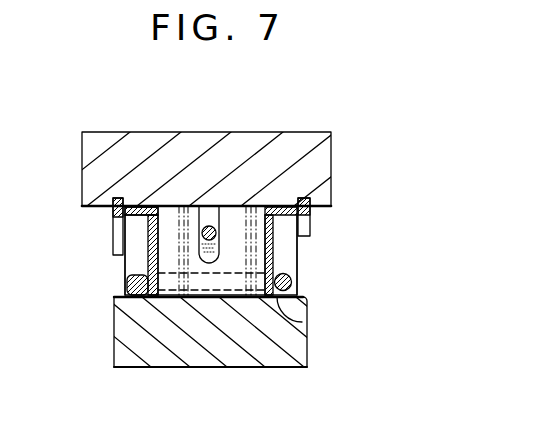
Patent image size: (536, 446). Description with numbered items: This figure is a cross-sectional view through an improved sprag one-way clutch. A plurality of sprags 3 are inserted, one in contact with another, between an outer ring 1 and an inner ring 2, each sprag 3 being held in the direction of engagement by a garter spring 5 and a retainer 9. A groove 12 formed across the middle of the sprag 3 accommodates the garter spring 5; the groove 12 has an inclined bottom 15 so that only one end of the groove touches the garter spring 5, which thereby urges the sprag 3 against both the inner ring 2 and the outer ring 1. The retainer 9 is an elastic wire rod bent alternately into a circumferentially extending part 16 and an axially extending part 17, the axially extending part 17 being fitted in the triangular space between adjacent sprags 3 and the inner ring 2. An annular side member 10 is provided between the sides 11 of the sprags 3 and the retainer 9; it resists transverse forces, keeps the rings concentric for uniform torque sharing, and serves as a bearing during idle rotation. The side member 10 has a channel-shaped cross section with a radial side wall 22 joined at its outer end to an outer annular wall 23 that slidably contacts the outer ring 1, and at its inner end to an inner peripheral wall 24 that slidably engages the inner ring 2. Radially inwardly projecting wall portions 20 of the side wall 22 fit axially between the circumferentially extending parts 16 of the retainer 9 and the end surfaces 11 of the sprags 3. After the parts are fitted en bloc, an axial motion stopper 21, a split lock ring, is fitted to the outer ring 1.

The outer ring 1 is at (286, 150).
The inner ring 2 is at (280, 357).
The sprag 3 is at (235, 223).
The garter spring 5 is at (198, 217).
The retainer 9 is at (233, 280).
The annular side member 10 is at (125, 268).
The sides of the sprags 11 is at (136, 201).
The groove 12 is at (209, 225).
The bottom of the groove 15 is at (210, 263).
The circumferentially extending part 16 is at (128, 280).
The axially extending part 17 is at (182, 310).
The radially inwardly projecting wall portions 20 is at (300, 320).
The axial motion stopper 21 is at (113, 209).
The side wall 22 is at (148, 252).
The outer annular wall 23 is at (135, 200).
The inner peripheral wall 24 is at (139, 297).